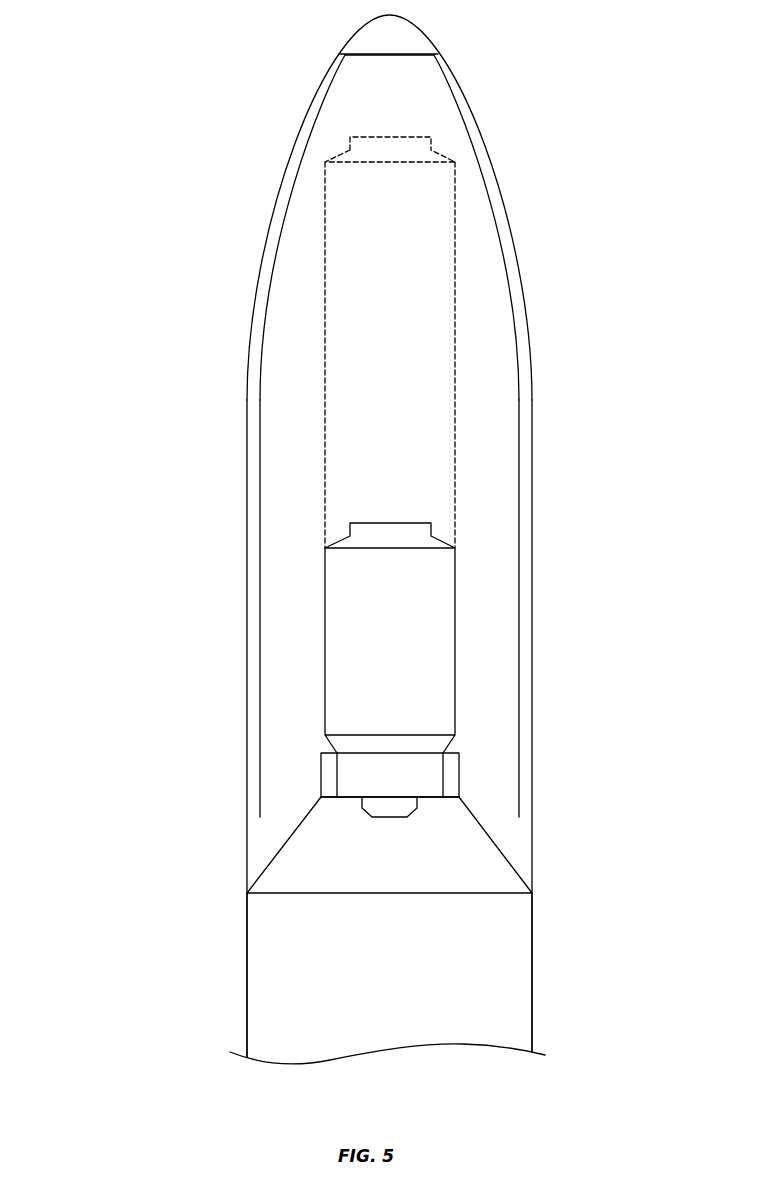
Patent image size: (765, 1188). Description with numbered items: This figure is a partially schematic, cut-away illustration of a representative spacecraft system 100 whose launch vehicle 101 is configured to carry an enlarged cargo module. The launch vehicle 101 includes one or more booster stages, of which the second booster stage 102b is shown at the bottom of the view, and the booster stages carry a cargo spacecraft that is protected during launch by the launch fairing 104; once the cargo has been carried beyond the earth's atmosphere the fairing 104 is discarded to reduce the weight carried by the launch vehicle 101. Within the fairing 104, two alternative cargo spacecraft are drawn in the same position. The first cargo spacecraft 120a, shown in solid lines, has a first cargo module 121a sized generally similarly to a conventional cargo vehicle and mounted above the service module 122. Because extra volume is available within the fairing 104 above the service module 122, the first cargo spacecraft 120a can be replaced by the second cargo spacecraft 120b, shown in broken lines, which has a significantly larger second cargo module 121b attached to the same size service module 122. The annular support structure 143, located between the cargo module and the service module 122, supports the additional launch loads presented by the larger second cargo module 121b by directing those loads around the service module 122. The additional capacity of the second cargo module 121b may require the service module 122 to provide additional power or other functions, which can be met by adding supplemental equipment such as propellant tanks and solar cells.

The spacecraft system 100 is at (116, 74).
The launch vehicle 101 is at (151, 794).
The second booster stage 102b is at (532, 970).
The launch fairing 104 is at (512, 248).
The first cargo spacecraft 120a is at (550, 525).
The second cargo spacecraft 120b is at (228, 137).
The first cargo module 121a is at (455, 646).
The second cargo module 121b is at (455, 207).
The service module 122 is at (350, 787).
The annular support structure 143 is at (459, 773).